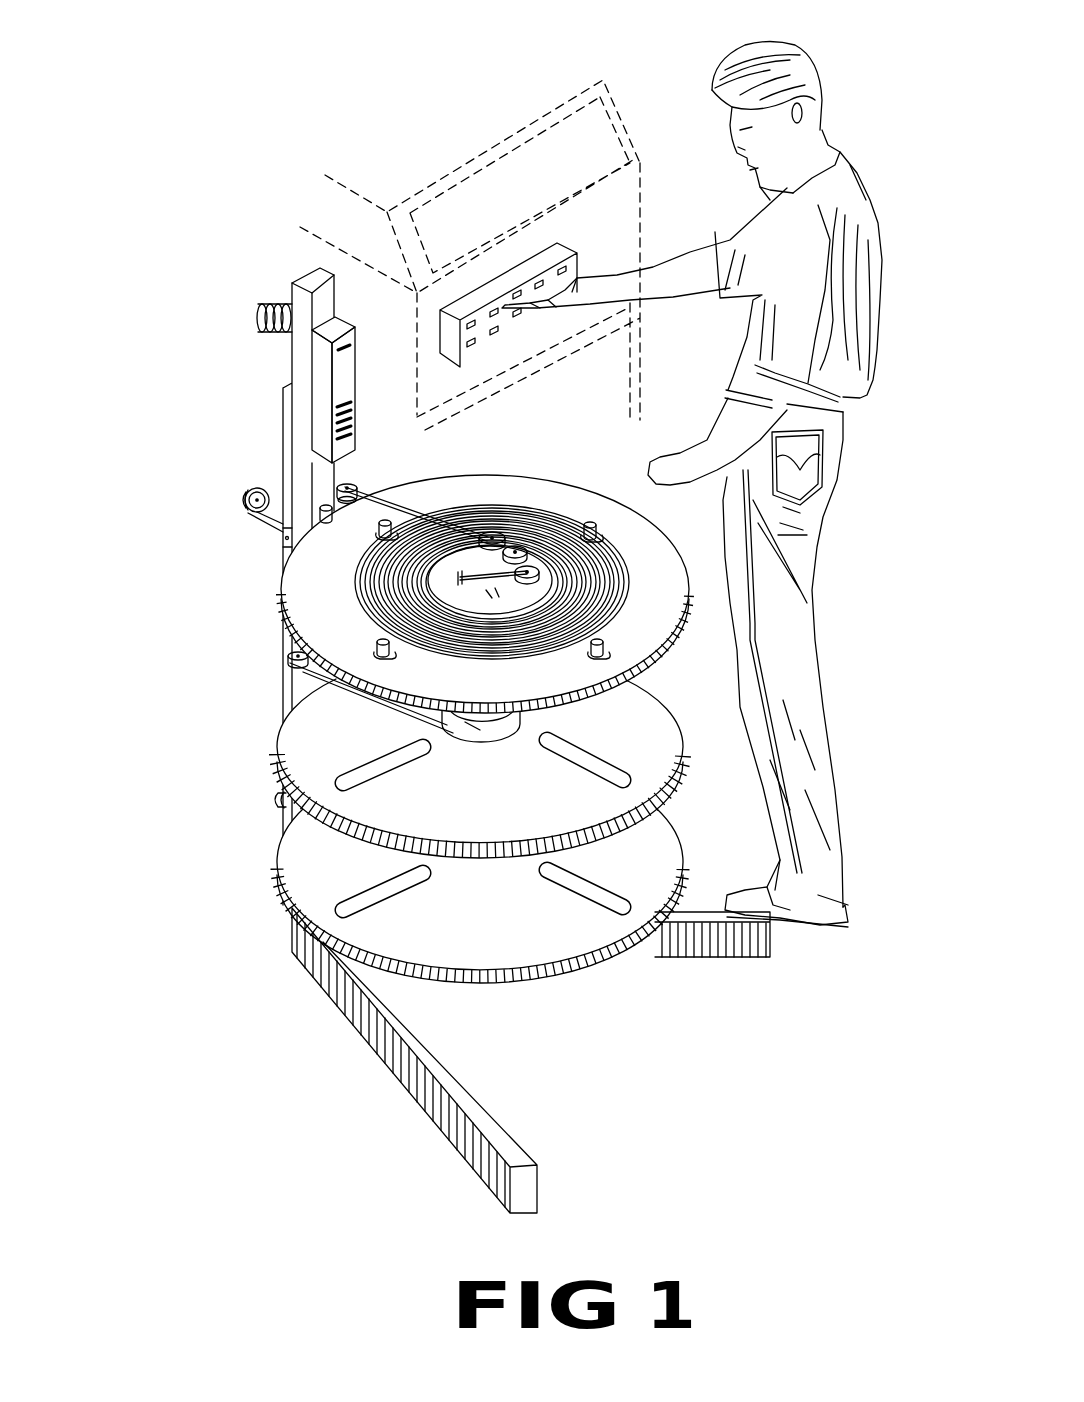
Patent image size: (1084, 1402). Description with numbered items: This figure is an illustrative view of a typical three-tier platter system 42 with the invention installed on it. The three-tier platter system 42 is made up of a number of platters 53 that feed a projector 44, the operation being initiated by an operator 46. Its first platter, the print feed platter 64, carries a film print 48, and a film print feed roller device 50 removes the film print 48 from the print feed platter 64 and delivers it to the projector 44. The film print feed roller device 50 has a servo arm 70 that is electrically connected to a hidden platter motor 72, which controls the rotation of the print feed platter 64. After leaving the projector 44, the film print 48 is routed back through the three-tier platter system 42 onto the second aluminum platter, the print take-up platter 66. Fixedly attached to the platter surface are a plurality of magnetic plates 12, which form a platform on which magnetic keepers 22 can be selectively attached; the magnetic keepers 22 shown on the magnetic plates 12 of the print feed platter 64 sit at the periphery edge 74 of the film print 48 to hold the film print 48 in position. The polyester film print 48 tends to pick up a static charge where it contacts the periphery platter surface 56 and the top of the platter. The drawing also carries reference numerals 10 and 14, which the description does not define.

The dispensing apparatus 10 is at (257, 148).
The magnetic plates 12 is at (575, 520).
The turntable platform 14 is at (653, 560).
The magnetic keepers 22 is at (588, 520).
The three-tier platter system 42 is at (305, 278).
The projector 44 is at (413, 197).
The operator 46 is at (693, 263).
The film print 48 is at (337, 500).
The film print feed roller device 50 is at (503, 525).
The platters 53 is at (648, 696).
The periphery platter surface 56 is at (478, 722).
The first platter/print feed platter 64 is at (307, 627).
The second aluminum platter/print take-up platter 66 is at (292, 735).
The servo arm 70 is at (440, 528).
The hidden platter motor 72 is at (283, 598).
The periphery edge 74 is at (307, 591).